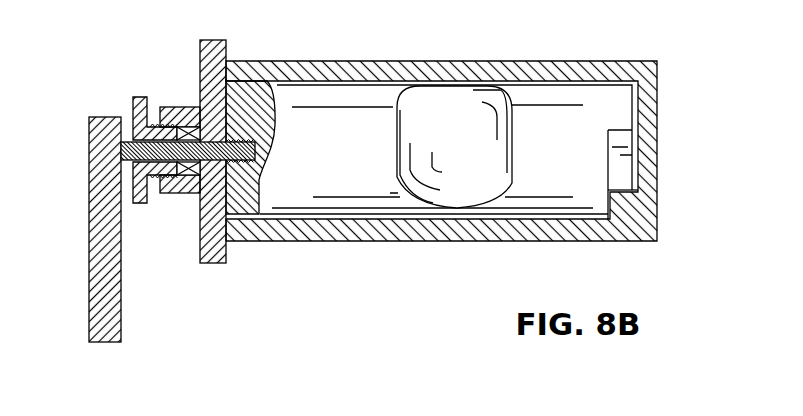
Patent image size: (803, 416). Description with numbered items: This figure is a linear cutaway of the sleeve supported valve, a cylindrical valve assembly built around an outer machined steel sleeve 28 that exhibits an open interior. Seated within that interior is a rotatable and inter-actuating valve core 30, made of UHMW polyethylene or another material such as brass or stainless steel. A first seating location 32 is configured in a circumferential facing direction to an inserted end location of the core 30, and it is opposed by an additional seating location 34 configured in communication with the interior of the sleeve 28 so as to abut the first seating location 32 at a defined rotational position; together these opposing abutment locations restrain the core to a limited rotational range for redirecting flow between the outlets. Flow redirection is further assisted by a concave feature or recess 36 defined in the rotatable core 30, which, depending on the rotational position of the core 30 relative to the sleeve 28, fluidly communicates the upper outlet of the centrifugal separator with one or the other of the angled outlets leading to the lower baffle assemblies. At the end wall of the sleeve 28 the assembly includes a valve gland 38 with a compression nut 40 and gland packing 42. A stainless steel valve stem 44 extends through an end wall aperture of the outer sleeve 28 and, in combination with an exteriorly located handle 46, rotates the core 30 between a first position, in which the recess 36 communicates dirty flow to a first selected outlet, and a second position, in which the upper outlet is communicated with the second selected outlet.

The outer machined steel sleeve 28 is at (346, 68).
The valve core 30 is at (562, 102).
The first seating location 32 is at (620, 167).
The additional seating location 34 is at (622, 190).
The concave feature or recess 36 is at (467, 120).
The valve gland 38 is at (180, 105).
The compression nut 40 is at (142, 97).
The gland packing 42 is at (192, 176).
The valve stem 44 is at (240, 163).
The handle 46 is at (103, 290).